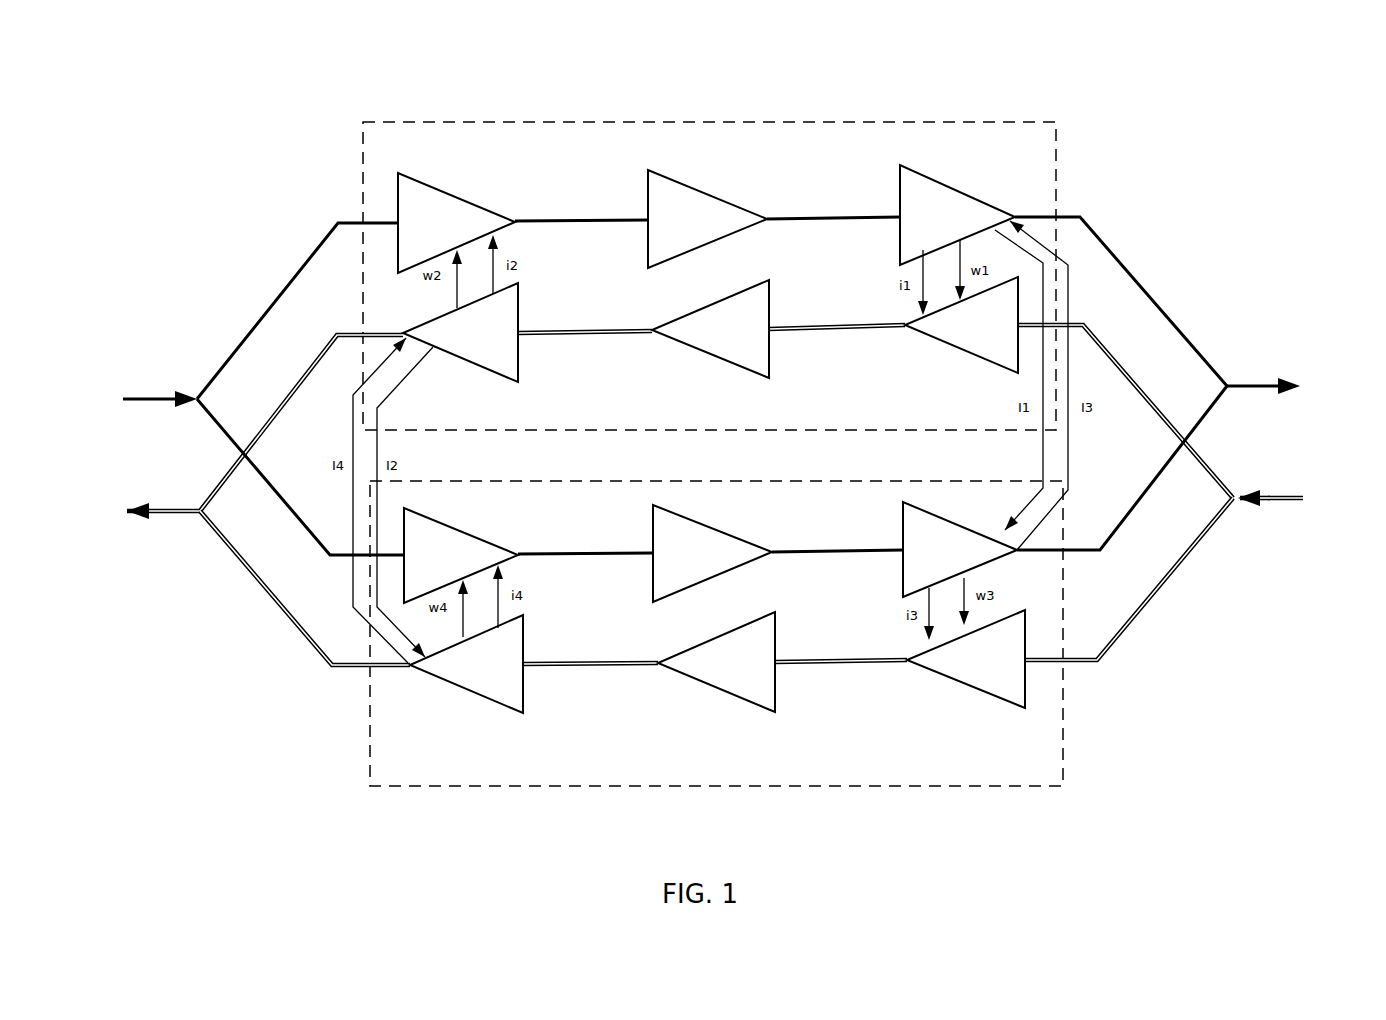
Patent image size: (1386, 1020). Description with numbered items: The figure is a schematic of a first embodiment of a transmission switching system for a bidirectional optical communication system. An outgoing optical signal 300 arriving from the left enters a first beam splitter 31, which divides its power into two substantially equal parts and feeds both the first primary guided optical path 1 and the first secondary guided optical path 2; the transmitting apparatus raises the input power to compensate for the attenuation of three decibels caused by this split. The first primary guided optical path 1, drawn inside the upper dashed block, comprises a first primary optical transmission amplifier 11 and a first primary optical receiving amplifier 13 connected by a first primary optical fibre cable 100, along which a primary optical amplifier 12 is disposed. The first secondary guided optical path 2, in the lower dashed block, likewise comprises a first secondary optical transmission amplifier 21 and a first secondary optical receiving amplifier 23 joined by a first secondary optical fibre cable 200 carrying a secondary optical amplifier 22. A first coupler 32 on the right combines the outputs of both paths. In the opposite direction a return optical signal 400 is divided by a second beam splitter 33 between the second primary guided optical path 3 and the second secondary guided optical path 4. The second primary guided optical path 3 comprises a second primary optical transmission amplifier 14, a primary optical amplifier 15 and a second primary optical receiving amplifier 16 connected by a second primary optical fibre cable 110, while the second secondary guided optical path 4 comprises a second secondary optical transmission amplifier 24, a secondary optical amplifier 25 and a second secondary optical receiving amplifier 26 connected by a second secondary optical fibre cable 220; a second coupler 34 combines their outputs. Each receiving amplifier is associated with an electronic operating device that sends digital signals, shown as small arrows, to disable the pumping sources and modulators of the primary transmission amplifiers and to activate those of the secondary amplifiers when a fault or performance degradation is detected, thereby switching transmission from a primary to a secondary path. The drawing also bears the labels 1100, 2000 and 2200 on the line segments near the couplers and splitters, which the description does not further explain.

The first primary guided optical path 1 is at (332, 213).
The first secondary guided optical path 2 is at (287, 528).
The second primary guided optical path 3 is at (1143, 375).
The second secondary guided optical path 4 is at (1163, 590).
The first primary optical transmission amplifier 11 is at (443, 208).
The primary optical amplifier 12 is at (690, 207).
The first primary optical receiving amplifier 13 is at (943, 193).
The second primary optical transmission amplifier 14 is at (990, 347).
The primary optical amplifier 15 is at (742, 350).
The second primary optical receiving amplifier 16 is at (493, 357).
The first secondary optical transmission amplifier 21 is at (458, 537).
The secondary optical amplifier 22 is at (720, 540).
The first secondary optical receiving amplifier 23 is at (933, 527).
The second secondary optical transmission amplifier 24 is at (995, 685).
The secondary optical amplifier 25 is at (757, 690).
The second secondary optical receiving amplifier 26 is at (495, 690).
The first beam splitter 31 is at (195, 380).
The first coupler 32 is at (1228, 378).
The second beam splitter 33 is at (1233, 510).
The second coupler 34 is at (200, 522).
The first primary optical fibre cable 100 is at (570, 218).
The second primary optical fibre cable 110 is at (565, 340).
The first secondary optical fibre cable 200 is at (563, 548).
The second secondary optical fibre cable 220 is at (577, 670).
The outgoing optical signal 300 is at (130, 388).
The return optical signal 400 is at (1295, 488).
The return path of first unit 1100 is at (1205, 462).
The forward path to second unit 2000 is at (215, 432).
The return path of second unit 2200 is at (1120, 637).